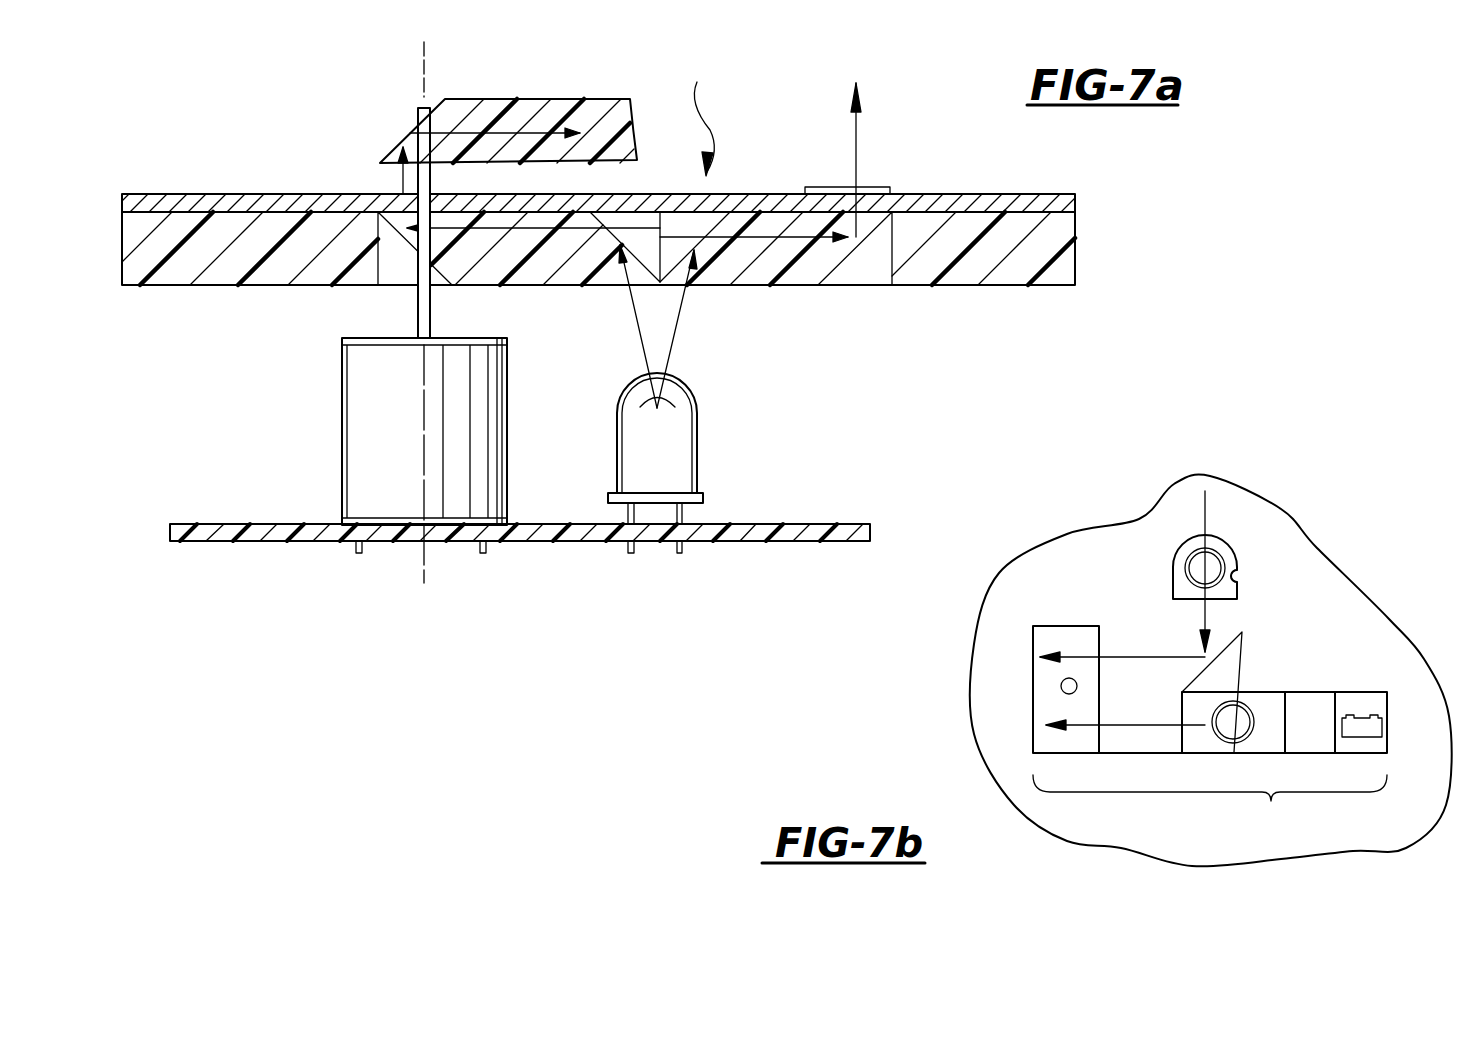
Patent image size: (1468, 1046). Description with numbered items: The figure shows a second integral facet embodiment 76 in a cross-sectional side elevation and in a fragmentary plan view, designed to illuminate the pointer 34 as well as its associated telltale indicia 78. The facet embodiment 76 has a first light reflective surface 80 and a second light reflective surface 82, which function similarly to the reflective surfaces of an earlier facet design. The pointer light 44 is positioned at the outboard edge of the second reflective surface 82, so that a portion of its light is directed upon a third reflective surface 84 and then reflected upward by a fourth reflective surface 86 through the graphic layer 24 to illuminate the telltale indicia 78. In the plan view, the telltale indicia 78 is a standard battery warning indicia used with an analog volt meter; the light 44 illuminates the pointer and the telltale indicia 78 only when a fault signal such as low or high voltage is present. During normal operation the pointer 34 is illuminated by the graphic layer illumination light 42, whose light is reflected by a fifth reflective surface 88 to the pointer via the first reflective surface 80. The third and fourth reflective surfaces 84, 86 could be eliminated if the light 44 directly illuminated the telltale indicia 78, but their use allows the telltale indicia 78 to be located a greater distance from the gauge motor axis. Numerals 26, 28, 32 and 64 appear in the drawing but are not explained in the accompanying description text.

In FIG. 7A, the graphic layer 24 is at (235, 193).
In FIG. 7A, the light guide panel 26 is at (178, 287).
In FIG. 7B, the light guide panel 26 is at (1144, 837).
In FIG. 7A, the circuit board 28 is at (250, 542).
In FIG. 7A, the motor / rotary actuator 32 is at (342, 402).
In FIG. 7A, the pointer 34 is at (557, 98).
In FIG. 7B, the graphic layer illumination light 42 is at (1215, 563).
In FIG. 7A, the pointer light 44 is at (688, 415).
In FIG. 7B, the pointer light 44 is at (1254, 716).
In FIG. 7B, the sensor notch 64 is at (1240, 583).
In FIG. 7A, the second integral facet embodiment 76 is at (707, 115).
In FIG. 7B, the second integral facet embodiment 76 is at (1267, 824).
In FIG. 7A, the telltale indicia 78 is at (878, 187).
In FIG. 7B, the telltale indicia 78 is at (1372, 720).
In FIG. 7A, the first light reflective surface 80 is at (405, 237).
In FIG. 7B, the first light reflective surface 80 is at (1062, 635).
In FIG. 7A, the second light reflective surface 82 is at (617, 235).
In FIG. 7A, the third reflective surface 84 is at (678, 262).
In FIG. 7A, the fourth reflective surface 86 is at (853, 250).
In FIG. 7B, the fifth reflective surface 88 is at (1235, 650).